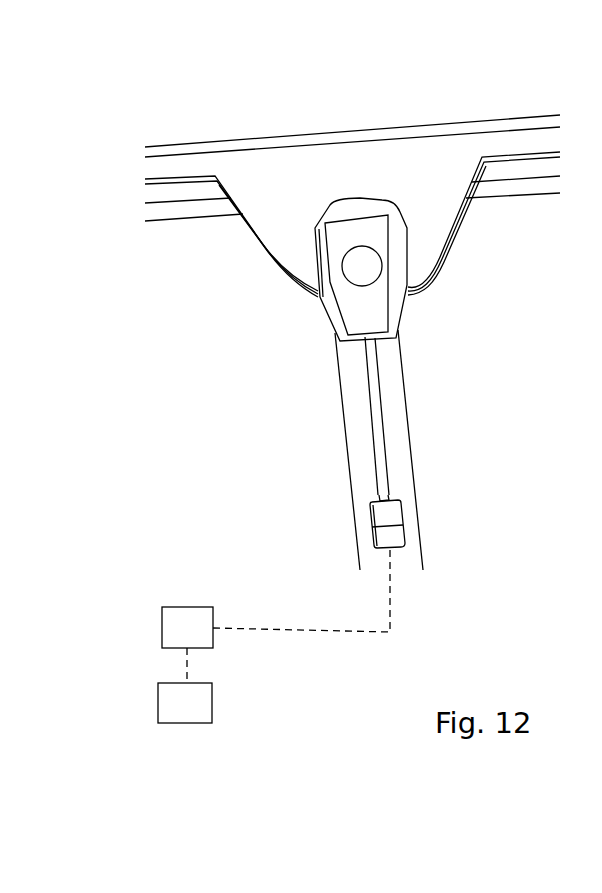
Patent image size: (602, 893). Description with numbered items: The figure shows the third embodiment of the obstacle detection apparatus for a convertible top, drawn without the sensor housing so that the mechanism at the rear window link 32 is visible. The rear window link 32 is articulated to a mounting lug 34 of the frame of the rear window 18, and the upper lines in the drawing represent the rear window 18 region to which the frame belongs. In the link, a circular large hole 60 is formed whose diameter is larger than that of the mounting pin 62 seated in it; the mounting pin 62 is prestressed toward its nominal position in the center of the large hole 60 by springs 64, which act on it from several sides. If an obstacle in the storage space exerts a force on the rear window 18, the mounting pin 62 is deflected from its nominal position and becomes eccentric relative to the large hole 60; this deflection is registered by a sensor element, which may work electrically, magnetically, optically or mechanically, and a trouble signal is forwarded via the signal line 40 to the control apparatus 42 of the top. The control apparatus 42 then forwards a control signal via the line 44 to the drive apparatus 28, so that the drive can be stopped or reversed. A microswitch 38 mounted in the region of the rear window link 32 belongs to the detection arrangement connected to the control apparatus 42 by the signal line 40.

The rear window 18 is at (170, 137).
The microswitch 38 is at (533, 140).
The mounting lug 34 is at (435, 213).
The mounting pin 62 is at (347, 247).
The springs 64 is at (363, 252).
The large hole 60 is at (355, 246).
The rear window link 32 is at (403, 560).
The signal line 40 is at (388, 595).
The control apparatus 42 is at (187, 627).
The line 44 is at (188, 660).
The drive apparatus 28 is at (185, 703).